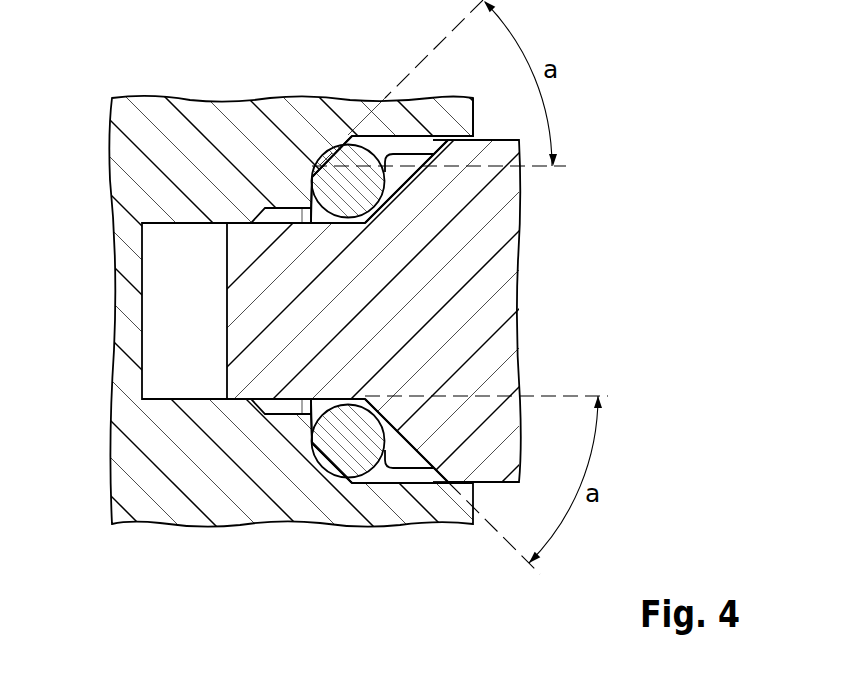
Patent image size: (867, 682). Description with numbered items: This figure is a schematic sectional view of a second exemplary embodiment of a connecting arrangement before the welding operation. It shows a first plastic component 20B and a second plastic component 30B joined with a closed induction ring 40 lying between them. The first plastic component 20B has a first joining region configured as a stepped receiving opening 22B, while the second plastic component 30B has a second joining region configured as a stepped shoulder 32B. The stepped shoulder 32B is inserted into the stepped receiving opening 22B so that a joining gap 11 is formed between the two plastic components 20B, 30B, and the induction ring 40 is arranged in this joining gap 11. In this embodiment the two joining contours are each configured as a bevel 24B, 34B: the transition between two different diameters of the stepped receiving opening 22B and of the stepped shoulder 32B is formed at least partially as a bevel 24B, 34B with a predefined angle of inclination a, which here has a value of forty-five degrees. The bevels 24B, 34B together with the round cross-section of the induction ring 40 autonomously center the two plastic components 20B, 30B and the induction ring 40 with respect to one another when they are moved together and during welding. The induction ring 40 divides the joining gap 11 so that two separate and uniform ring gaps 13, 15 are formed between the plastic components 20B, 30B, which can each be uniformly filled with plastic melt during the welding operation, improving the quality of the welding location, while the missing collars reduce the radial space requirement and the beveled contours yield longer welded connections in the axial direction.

The joining gap 11 is at (389, 110).
The ring gap 13 is at (427, 147).
The ring gap 15 is at (280, 217).
The first plastic component 20B is at (130, 143).
The stepped receiving opening 22B is at (311, 120).
The bevel 24B is at (331, 161).
The second plastic component 30B is at (503, 368).
The stepped shoulder 32B is at (377, 225).
The bevel 34B is at (366, 203).
The closed induction ring 40 is at (348, 455).